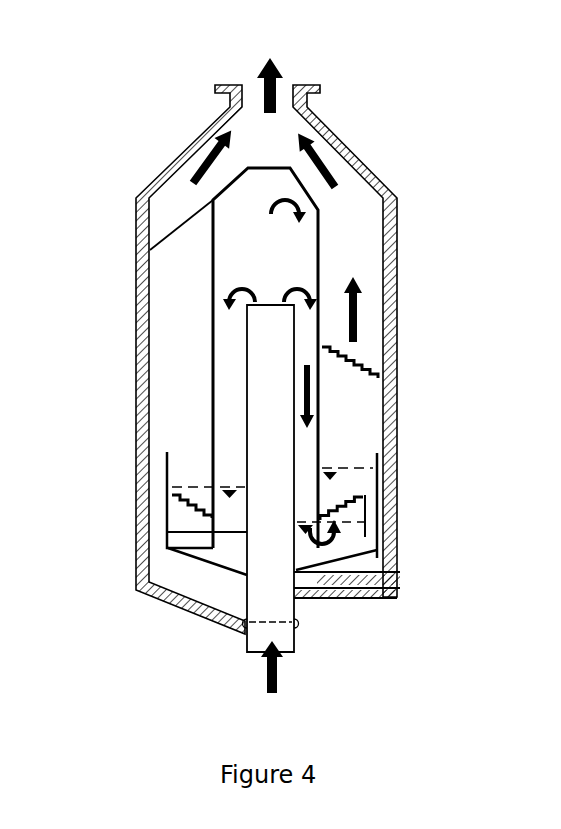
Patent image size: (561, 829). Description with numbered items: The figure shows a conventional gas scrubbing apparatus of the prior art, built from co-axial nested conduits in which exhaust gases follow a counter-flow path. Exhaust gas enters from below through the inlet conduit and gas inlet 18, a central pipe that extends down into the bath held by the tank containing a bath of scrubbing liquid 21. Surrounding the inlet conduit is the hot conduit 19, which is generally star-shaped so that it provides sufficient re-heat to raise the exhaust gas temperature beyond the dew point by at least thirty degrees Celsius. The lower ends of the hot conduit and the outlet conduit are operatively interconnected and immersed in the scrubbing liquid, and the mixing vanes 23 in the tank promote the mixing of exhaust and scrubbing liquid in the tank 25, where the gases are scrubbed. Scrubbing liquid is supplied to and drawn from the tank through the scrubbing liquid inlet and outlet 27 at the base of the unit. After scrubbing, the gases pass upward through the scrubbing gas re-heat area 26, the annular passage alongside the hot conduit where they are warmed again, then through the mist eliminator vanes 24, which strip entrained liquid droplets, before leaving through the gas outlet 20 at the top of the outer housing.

The inlet conduit and gas inlet 18 is at (263, 640).
The hot conduit 19 is at (202, 392).
The gas outlet 20 is at (137, 300).
The tank containing a bath of scrubbing liquid 21 is at (167, 452).
The mixing vanes 23 is at (172, 495).
The mist eliminator vanes 24 is at (367, 358).
The mixing exhaust and scrubbing liquid in the tank 25 is at (355, 484).
The scrubbing gas re-heat area 26 is at (352, 265).
The scrubbing liquid inlet and outlet 27 is at (410, 578).